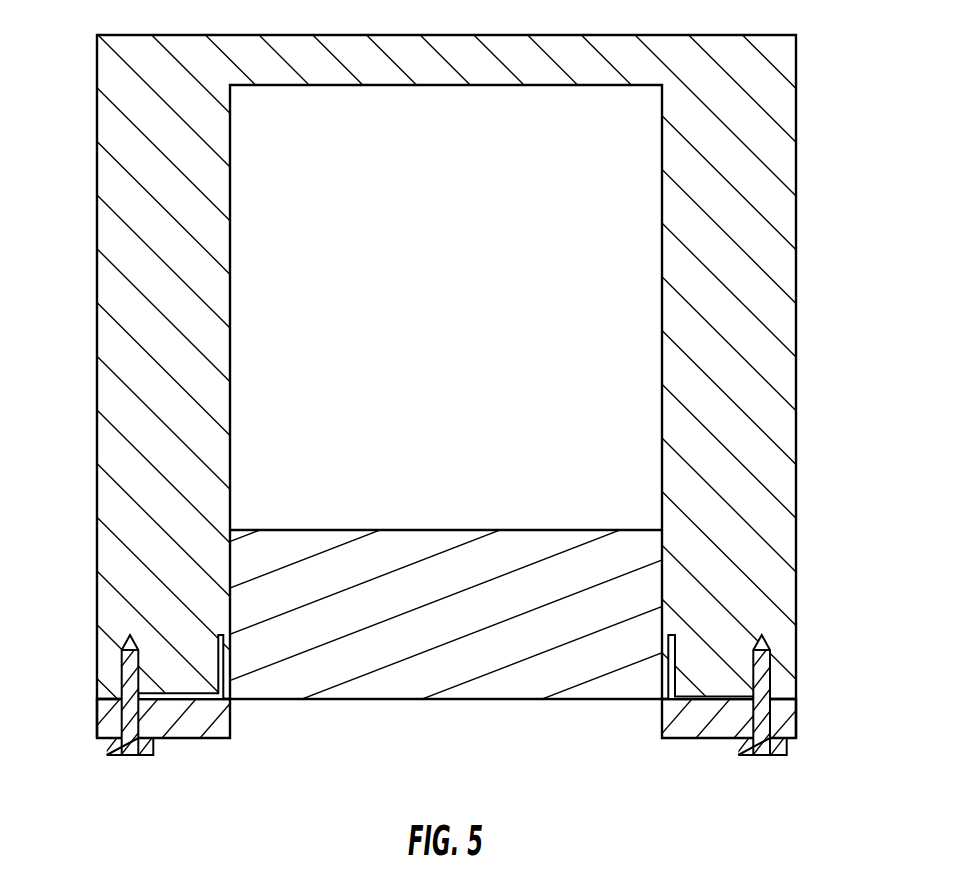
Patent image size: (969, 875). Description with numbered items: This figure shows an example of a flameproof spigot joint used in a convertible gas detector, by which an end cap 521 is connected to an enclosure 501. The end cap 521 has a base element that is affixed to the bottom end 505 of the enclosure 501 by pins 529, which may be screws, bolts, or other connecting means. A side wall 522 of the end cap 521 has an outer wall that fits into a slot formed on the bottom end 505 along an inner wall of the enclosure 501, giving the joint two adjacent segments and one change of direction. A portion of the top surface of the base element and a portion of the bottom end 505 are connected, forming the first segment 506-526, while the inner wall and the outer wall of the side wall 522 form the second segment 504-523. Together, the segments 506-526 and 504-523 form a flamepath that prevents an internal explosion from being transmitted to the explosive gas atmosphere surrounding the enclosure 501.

The enclosure 501 is at (97, 287).
The bottom end 505 is at (102, 693).
The pins 529 is at (120, 743).
The connected portions of bottom end and base element top surface 506-526 is at (192, 698).
The inner wall and outer wall of side wall 504-523 is at (220, 657).
The side wall 522 is at (668, 673).
The end cap 521 is at (700, 723).